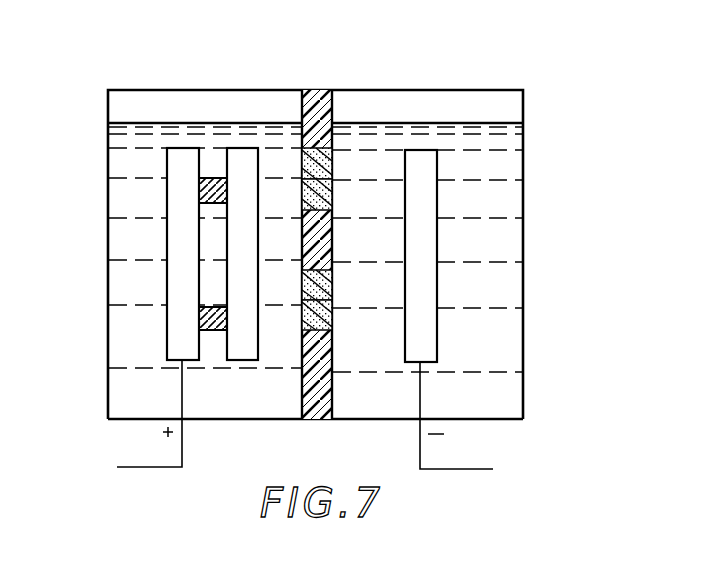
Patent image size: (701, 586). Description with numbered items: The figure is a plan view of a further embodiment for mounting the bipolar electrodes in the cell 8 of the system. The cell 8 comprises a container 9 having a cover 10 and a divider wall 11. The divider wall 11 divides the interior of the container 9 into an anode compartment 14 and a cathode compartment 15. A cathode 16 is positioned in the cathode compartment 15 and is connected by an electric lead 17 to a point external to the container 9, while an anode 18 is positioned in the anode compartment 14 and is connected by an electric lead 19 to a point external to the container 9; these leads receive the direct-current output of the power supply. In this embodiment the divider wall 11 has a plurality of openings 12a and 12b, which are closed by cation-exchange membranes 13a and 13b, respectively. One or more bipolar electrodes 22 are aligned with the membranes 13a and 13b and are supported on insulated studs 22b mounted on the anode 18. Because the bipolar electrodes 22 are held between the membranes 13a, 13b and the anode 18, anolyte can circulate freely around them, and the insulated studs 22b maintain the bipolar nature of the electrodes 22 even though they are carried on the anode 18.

The cell 8 is at (548, 245).
The container 9 is at (510, 424).
The cover 10 is at (200, 90).
The divider wall 11 is at (333, 137).
The opening 12a is at (333, 156).
The opening 12b is at (333, 276).
The cation-exchange membrane 13a is at (333, 200).
The cation-exchange membrane 13b is at (333, 306).
The anode compartment 14 is at (130, 204).
The cathode compartment 15 is at (505, 152).
The cathode 16 is at (425, 283).
The electric lead 17 is at (453, 470).
The anode 18 is at (180, 258).
The electric lead 19 is at (165, 468).
The bipolar electrode 22 is at (240, 217).
The insulated stud 22b is at (213, 178).